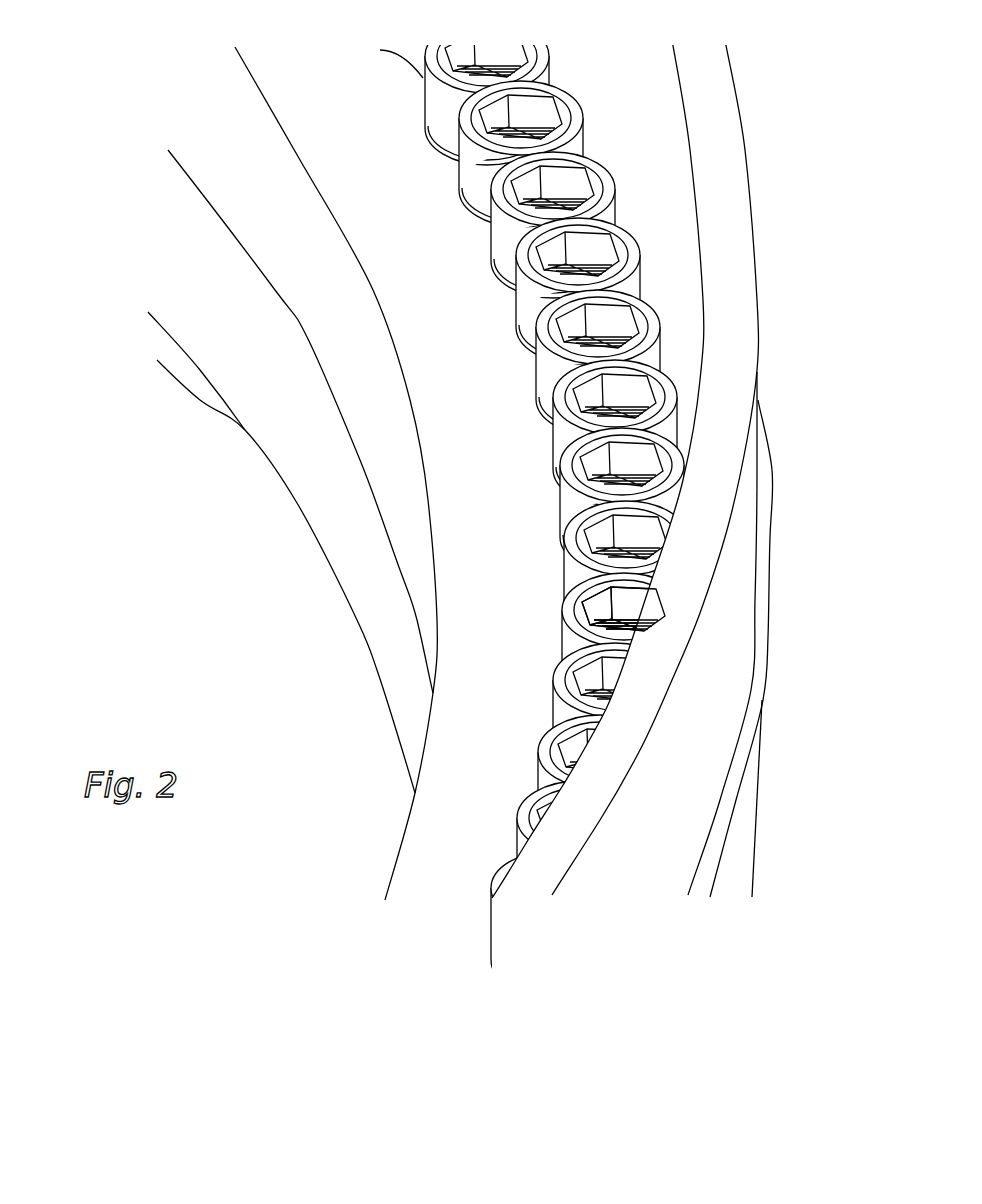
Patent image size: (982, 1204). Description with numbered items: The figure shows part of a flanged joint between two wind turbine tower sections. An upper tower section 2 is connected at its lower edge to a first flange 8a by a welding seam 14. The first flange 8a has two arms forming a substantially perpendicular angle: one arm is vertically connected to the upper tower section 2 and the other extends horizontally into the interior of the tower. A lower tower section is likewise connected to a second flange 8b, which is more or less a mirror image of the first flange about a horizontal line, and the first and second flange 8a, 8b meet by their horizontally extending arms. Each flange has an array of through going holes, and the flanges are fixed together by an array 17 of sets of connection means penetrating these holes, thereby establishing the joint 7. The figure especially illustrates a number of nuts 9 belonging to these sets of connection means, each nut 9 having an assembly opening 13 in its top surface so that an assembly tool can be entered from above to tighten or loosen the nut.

The upper tower section 2 is at (689, 469).
The band 7 is at (253, 552).
The first flange 8a is at (230, 350).
The second flange 8b is at (218, 140).
The nut 9 is at (668, 380).
The assembly opening 13 is at (580, 603).
The welding seam 14 is at (745, 768).
The array of sets of connection means 17 is at (661, 509).